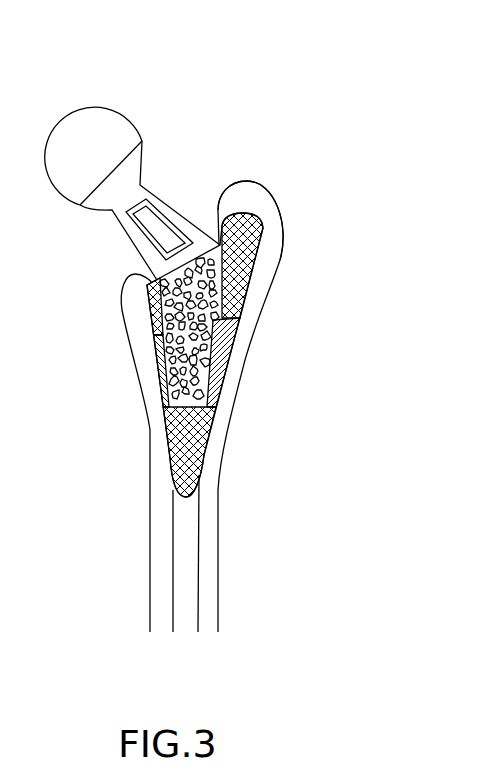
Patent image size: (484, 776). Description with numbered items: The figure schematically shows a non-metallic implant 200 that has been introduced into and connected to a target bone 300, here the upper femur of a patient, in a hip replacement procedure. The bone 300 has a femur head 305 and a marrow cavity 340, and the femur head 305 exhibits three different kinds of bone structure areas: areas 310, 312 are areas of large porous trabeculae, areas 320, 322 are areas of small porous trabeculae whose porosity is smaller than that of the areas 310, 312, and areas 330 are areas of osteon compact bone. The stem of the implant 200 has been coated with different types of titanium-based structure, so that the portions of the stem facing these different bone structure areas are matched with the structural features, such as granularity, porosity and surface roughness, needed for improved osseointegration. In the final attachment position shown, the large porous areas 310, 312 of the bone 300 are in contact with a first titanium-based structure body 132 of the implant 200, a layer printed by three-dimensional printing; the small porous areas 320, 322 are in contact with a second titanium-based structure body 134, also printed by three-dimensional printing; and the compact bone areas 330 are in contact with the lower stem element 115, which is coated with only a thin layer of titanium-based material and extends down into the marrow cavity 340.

The non-metallic implant 200 is at (142, 110).
The first titanium-based structure body 132 is at (183, 268).
The second titanium-based structure body 134 is at (210, 380).
The lower stem element 115 is at (175, 455).
The bone 300 is at (285, 188).
The femur head 305 is at (310, 210).
The area of large porous trabeculae 310 is at (243, 253).
The area of large porous trabeculae 312 is at (148, 310).
The area of small porous trabeculae 320 is at (230, 343).
The area of small porous trabeculae 322 is at (150, 360).
The area of osteon compact bone 330 is at (212, 447).
The marrow cavity 340 is at (183, 547).